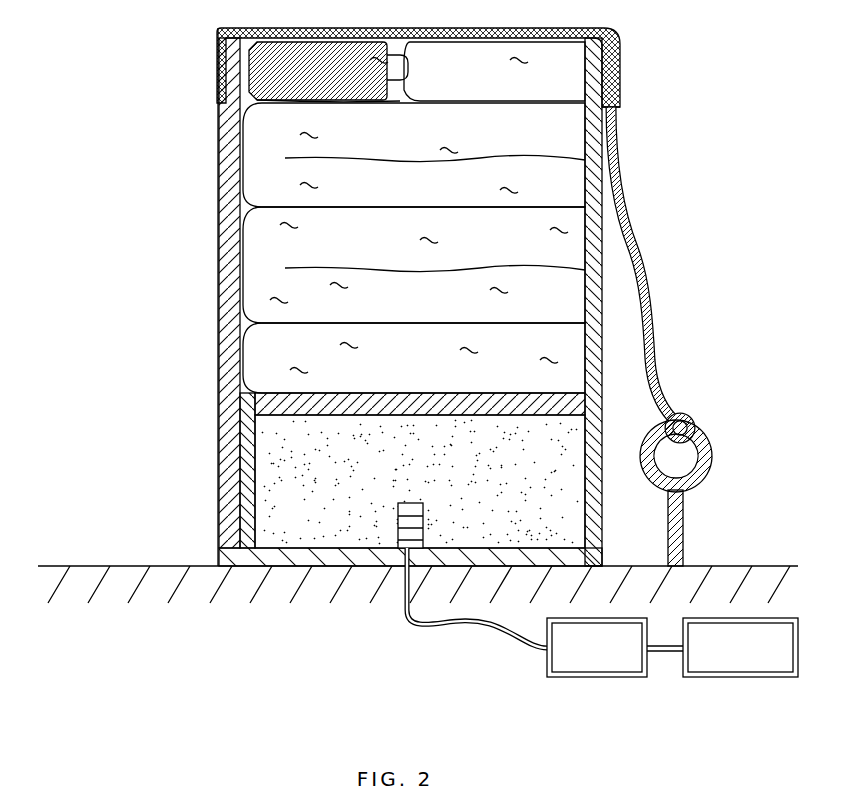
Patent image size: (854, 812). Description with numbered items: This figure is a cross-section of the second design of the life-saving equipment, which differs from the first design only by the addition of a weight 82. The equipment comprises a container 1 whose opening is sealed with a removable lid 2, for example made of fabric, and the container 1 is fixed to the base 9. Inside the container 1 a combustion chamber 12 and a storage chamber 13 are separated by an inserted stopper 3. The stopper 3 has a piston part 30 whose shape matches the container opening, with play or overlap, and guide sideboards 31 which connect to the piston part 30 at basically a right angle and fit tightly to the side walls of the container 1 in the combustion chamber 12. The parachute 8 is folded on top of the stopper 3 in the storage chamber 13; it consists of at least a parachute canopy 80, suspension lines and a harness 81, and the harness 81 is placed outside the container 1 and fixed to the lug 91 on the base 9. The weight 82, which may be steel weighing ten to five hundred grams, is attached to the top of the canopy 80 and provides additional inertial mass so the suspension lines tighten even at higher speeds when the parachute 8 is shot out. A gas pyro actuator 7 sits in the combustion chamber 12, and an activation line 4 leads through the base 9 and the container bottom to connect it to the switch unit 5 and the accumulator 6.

The container 1 is at (230, 210).
The removable lid 2 is at (216, 67).
The stopper 3 is at (248, 404).
The activation line 4 is at (432, 628).
The switch unit 5 is at (630, 663).
The accumulator 6 is at (782, 660).
The gas pyro actuator 7 is at (405, 540).
The parachute 8 is at (553, 143).
The base 9 is at (150, 590).
The combustion chamber 12 is at (290, 480).
The storage chamber 13 is at (573, 277).
The piston part 30 is at (377, 393).
The guide sideboards 31 is at (245, 512).
The parachute canopy 80 is at (277, 140).
The harness 81 is at (655, 357).
The weight 82 is at (240, 100).
The lug 91 is at (712, 440).